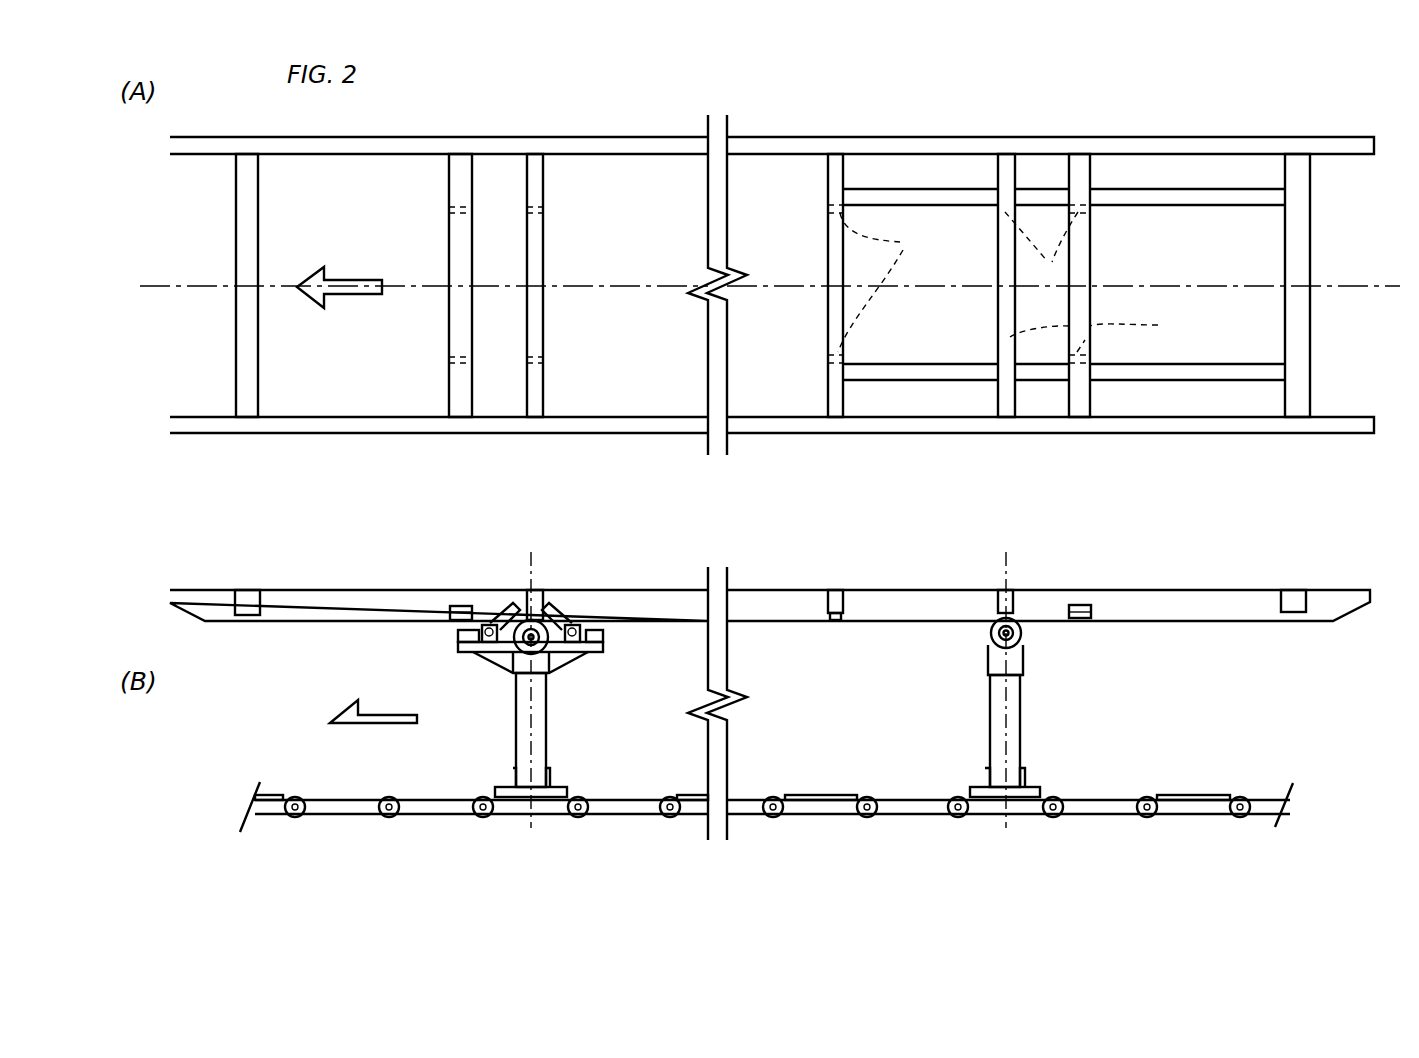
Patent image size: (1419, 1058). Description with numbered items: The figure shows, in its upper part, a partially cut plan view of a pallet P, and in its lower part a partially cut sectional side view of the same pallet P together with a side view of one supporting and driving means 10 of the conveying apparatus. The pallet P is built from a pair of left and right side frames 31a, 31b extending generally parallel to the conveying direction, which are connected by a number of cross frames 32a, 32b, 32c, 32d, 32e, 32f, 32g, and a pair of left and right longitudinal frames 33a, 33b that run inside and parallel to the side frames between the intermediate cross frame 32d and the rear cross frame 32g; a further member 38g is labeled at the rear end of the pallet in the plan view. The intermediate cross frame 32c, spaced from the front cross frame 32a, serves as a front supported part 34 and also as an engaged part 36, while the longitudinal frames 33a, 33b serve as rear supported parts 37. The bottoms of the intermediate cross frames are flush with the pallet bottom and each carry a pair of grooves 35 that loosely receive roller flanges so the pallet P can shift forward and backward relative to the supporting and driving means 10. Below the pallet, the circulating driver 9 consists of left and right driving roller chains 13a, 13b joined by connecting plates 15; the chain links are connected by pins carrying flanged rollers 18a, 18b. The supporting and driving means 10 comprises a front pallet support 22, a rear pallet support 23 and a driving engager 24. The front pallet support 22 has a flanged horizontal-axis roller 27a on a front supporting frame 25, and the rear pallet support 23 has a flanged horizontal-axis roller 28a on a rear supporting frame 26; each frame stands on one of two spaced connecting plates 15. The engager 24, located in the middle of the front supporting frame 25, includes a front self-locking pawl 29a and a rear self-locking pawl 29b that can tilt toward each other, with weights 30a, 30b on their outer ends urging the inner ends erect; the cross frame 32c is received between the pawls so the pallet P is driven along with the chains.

In FIG. 2B, the circulating driver 9 is at (765, 811).
In FIG. 2B, the supporting and driving means 10 is at (513, 638).
In FIG. 2B, the driving roller chain 13a is at (351, 820).
In FIG. 2B, the driving roller chain 13b is at (766, 840).
In FIG. 2B, the connecting plate 15 is at (545, 778).
In FIG. 2B, the flanged roller 18a is at (578, 818).
In FIG. 2B, the flanged roller 18b is at (767, 852).
In FIG. 2B, the front pallet support 22 is at (547, 665).
In FIG. 2B, the rear pallet support 23 is at (1005, 690).
In FIG. 2B, the driving engager 24 is at (560, 612).
In FIG. 2B, the front supporting frame 25 is at (456, 659).
In FIG. 2B, the rear supporting frame 26 is at (1022, 726).
In FIG. 2B, the flanged horizontal-axis roller 27a is at (520, 672).
In FIG. 2B, the flanged horizontal-axis roller 28a is at (1023, 642).
In FIG. 2B, the front self-locking pawl 29a is at (489, 628).
In FIG. 2B, the rear self-locking pawl 29b is at (568, 625).
In FIG. 2B, the weight 30a is at (458, 647).
In FIG. 2B, the weight 30b is at (603, 647).
In FIG. 2A, the side frame 31a is at (758, 433).
In FIG. 2A, the side frame 31b is at (747, 145).
In FIG. 2B, the side frame 31b is at (763, 607).
In FIG. 2A, the front cross frame 32a is at (246, 230).
In FIG. 2B, the front cross frame 32a is at (232, 607).
In FIG. 2A, the intermediate cross frame 32b is at (452, 302).
In FIG. 2B, the intermediate cross frame 32b is at (455, 605).
In FIG. 2A, the intermediate cross frame 32c is at (533, 243).
In FIG. 2B, the intermediate cross frame 32c is at (530, 555).
In FIG. 2B, the intermediate cross frame 32d is at (830, 605).
In FIG. 2A, the intermediate cross frame 32e is at (998, 320).
In FIG. 2B, the intermediate cross frame 32e is at (1012, 595).
In FIG. 2A, the intermediate cross frame 32f is at (1090, 248).
In FIG. 2B, the intermediate cross frame 32f is at (1085, 605).
In FIG. 2B, the rear cross frame 32g is at (1300, 600).
In FIG. 2A, the longitudinal frame 33a is at (1138, 380).
In FIG. 2A, the longitudinal frame 33b is at (1150, 189).
In FIG. 2B, the longitudinal frame 33b is at (1170, 605).
In FIG. 2A, the front supported part 34 is at (553, 243).
In FIG. 2B, the front supported part 34 is at (551, 638).
In FIG. 2A, the groove 35 is at (449, 210).
In FIG. 2B, the groove 35 is at (448, 612).
In FIG. 2A, the engaged part 36 is at (553, 243).
In FIG. 2B, the engaged part 36 is at (551, 638).
In FIG. 2A, the rear supported part 37 is at (1068, 284).
In FIG. 2B, the rear supported part 37 is at (1252, 642).
In FIG. 2A, the end cross member 38g is at (1310, 240).
In FIG. 2A, the pallet P is at (935, 433).
In FIG. 2B, the pallet P is at (893, 592).